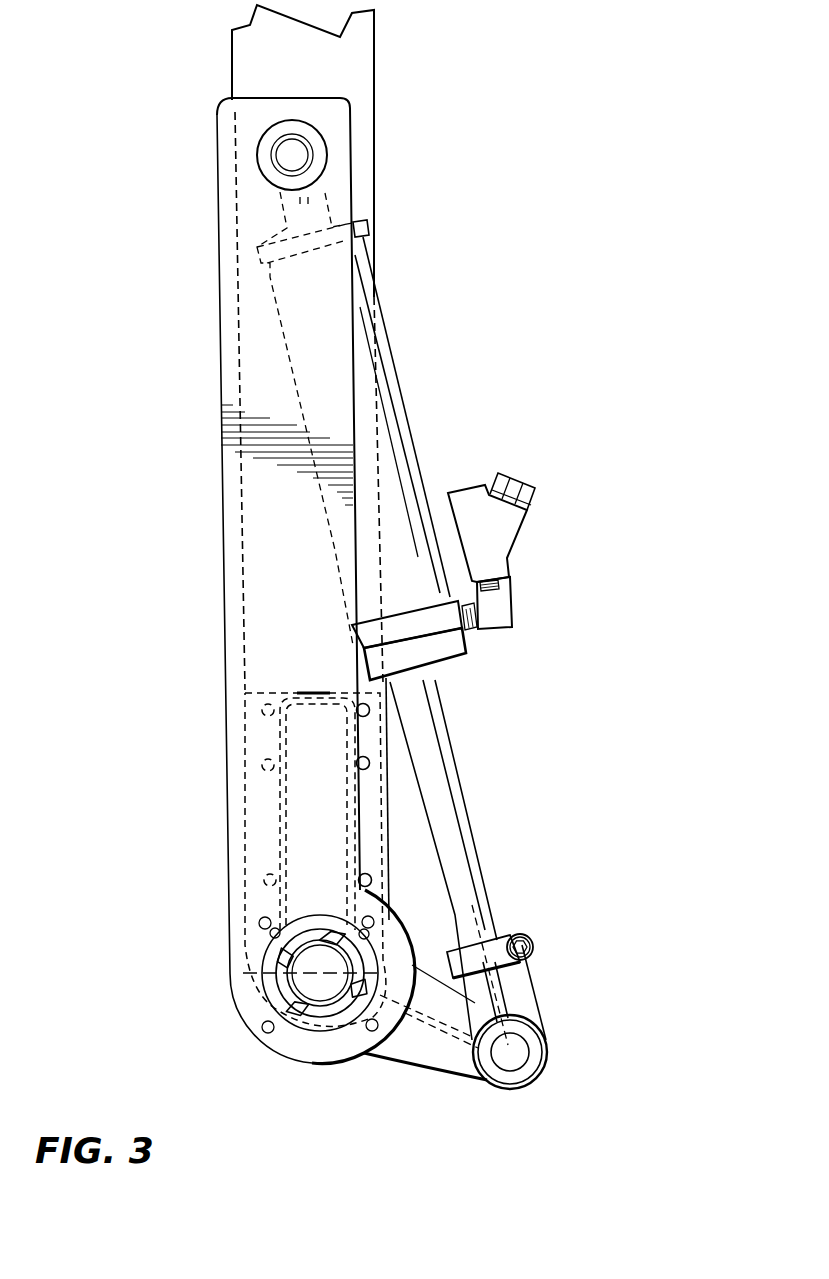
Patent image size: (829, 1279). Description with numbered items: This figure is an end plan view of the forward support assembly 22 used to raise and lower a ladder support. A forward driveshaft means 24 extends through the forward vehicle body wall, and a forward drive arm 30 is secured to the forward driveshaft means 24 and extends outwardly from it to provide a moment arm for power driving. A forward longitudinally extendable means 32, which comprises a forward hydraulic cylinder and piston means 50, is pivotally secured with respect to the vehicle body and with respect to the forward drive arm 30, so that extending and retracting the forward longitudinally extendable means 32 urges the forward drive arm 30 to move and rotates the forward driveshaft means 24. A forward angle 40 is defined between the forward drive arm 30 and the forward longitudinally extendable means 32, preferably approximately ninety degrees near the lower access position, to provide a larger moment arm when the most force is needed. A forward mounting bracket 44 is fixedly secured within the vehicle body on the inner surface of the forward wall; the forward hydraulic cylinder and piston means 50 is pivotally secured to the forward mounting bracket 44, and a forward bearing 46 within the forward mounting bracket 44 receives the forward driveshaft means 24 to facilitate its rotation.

The forward support assembly 22 is at (214, 777).
The forward driveshaft means 24 is at (336, 991).
The forward drive arm 30 is at (437, 1057).
The forward longitudinally extendable means 32 is at (400, 403).
The forward angle 40 is at (385, 1003).
The forward mounting bracket 44 is at (225, 637).
The forward bearing 46 is at (293, 1018).
The forward hydraulic cylinder and piston means 50 is at (422, 596).